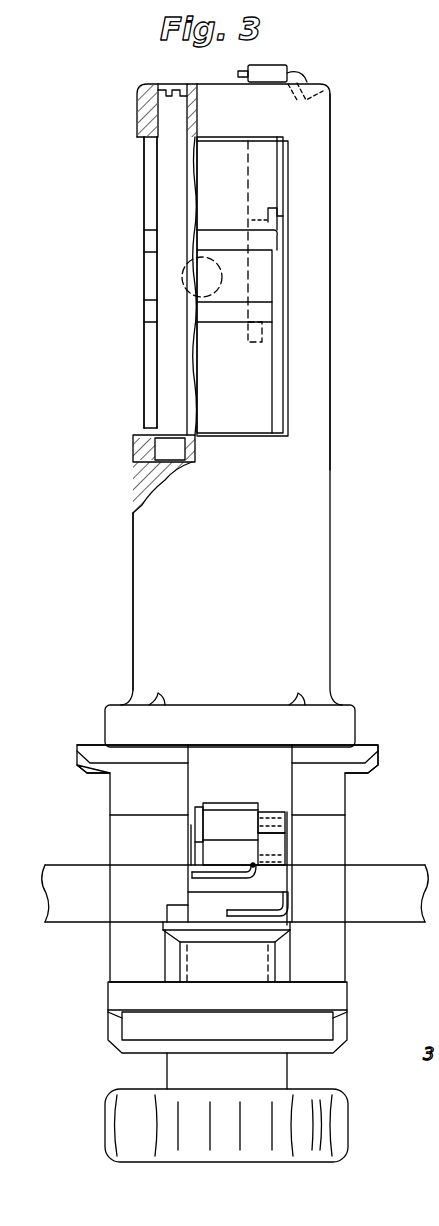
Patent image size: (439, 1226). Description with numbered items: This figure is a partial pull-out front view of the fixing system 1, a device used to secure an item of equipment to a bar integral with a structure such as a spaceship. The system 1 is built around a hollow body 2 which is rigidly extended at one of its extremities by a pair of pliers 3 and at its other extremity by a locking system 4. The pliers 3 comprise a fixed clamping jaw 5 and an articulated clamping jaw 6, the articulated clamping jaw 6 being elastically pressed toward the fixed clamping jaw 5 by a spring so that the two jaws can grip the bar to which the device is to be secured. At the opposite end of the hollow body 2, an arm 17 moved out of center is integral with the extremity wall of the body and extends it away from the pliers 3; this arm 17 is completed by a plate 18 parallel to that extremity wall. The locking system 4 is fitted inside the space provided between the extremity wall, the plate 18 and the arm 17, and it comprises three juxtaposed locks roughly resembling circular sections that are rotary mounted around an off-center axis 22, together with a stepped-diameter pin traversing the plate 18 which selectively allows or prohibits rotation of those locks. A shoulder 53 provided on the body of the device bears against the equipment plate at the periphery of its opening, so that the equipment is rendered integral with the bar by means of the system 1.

The system 1 is at (359, 644).
The hollow body 2 is at (331, 582).
The pliers 3 is at (356, 842).
The locking system 4 is at (129, 238).
The fixed clamping jaw 5 is at (331, 995).
The articulated clamping jaw 6 is at (217, 818).
The arm 17 is at (315, 262).
The plate 18 is at (218, 103).
The axis 22 is at (168, 382).
The shoulder 53 is at (89, 775).